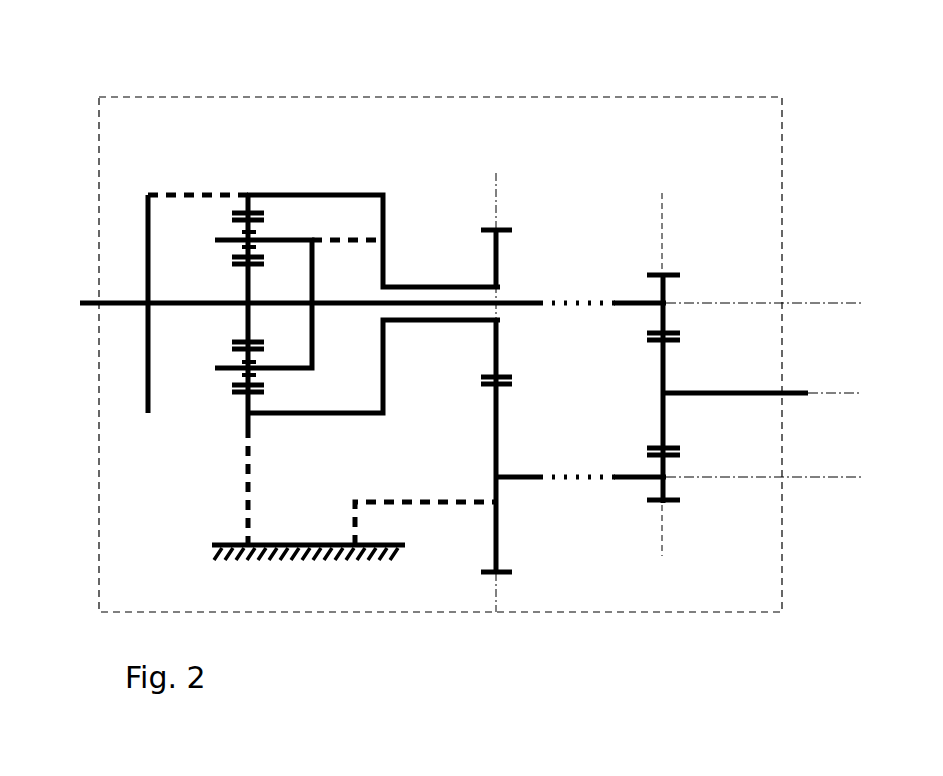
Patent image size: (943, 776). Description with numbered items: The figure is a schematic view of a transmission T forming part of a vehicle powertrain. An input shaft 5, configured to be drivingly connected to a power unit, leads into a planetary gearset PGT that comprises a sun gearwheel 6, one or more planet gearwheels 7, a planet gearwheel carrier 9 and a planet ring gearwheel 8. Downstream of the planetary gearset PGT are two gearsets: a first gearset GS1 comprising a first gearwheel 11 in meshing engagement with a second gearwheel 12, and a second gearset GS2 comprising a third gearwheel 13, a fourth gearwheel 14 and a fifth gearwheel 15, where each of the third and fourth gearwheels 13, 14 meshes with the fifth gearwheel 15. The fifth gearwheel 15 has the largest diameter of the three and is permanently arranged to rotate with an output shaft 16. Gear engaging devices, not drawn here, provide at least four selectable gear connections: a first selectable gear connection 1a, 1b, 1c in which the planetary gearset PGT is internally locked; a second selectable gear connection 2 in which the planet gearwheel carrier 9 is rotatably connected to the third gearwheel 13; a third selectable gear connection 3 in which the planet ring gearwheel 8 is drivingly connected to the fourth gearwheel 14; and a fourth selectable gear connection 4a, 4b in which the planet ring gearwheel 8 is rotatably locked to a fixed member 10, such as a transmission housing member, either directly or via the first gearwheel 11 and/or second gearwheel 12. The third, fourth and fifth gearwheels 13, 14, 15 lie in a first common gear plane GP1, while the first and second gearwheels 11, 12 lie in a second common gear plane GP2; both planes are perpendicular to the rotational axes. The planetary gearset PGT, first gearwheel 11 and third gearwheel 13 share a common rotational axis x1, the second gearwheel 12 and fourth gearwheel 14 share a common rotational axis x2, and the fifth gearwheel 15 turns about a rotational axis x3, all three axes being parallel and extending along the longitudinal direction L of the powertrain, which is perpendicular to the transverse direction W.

The transmission T is at (642, 100).
The planetary gearset PGT is at (372, 168).
The first selectable gear connection 1a is at (225, 186).
The first selectable gear connection 1b is at (272, 300).
The first selectable gear connection 1c is at (345, 238).
The second selectable gear connection 2 is at (588, 302).
The third selectable gear connection 3 is at (583, 482).
The fourth selectable gear connection 4a is at (250, 510).
The fourth selectable gear connection 4b is at (367, 500).
The input shaft 5 is at (125, 306).
The sun gearwheel 6 is at (238, 338).
The planet gearwheels 7 is at (233, 354).
The planet ring gearwheel 8 is at (237, 395).
The planet gearwheel carrier 9 is at (314, 357).
The fixed member 10 is at (217, 543).
The first gearwheel 11 is at (500, 240).
The second gearwheel 12 is at (500, 413).
The third gearwheel 13 is at (667, 292).
The fourth gearwheel 14 is at (667, 489).
The fifth gearwheel 15 is at (667, 431).
The output shaft 16 is at (753, 390).
The first common gear plane GP1 is at (662, 195).
The second common gear plane GP2 is at (495, 193).
The first gearset GS1 is at (512, 210).
The second gearset GS2 is at (677, 253).
The rotational axis x1 is at (891, 302).
The rotational axis x2 is at (891, 478).
The rotational axis x3 is at (891, 392).
The transverse direction W is at (722, 707).
The longitudinal direction L is at (722, 707).